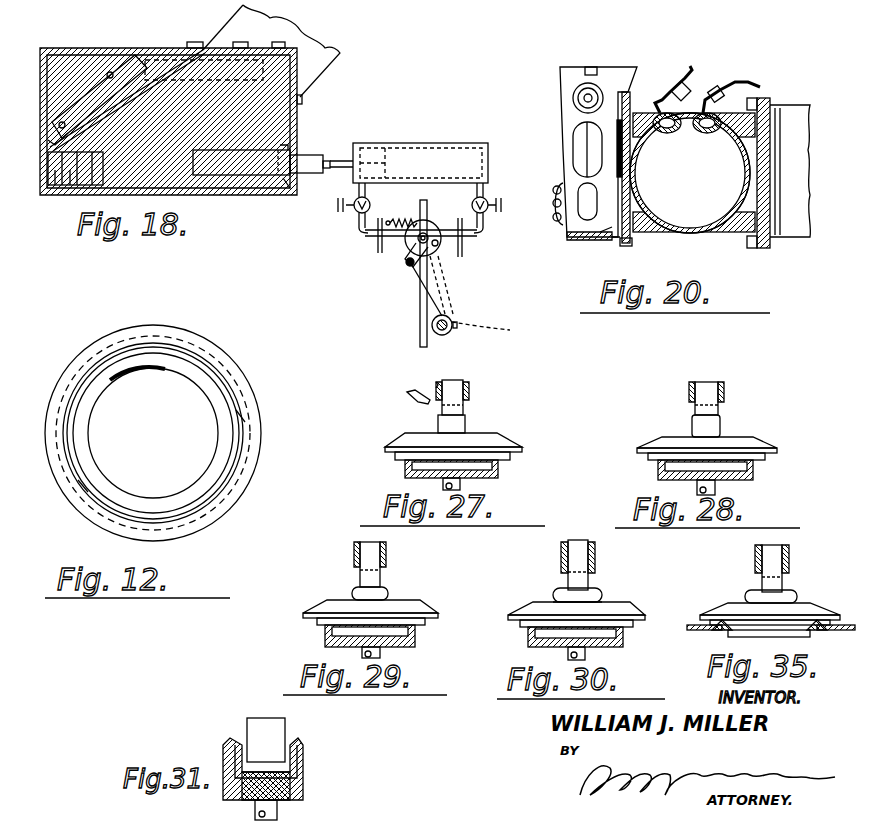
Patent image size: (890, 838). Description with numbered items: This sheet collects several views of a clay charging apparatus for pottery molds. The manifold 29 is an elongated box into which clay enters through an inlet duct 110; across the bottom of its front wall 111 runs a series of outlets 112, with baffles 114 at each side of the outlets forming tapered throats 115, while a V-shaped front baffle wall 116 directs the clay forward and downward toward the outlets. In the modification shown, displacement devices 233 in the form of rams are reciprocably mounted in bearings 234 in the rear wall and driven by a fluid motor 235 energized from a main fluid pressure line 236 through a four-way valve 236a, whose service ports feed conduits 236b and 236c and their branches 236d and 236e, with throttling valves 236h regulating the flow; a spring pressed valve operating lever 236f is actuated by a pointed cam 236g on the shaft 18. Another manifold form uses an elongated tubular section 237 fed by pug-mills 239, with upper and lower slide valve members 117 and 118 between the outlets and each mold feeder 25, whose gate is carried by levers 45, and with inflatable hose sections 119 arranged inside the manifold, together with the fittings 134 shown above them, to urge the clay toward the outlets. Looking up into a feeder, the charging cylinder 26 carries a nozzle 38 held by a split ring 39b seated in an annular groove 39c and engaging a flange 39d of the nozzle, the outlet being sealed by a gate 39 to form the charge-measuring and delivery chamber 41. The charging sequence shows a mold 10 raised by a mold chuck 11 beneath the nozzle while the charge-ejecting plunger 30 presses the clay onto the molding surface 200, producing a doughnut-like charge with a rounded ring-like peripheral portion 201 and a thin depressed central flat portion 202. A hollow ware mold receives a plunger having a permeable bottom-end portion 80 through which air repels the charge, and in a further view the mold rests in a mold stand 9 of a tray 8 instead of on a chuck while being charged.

In FIG. 35, the tray 8 is at (690, 627).
In FIG. 35, the mold stand 9 is at (712, 633).
In FIG. 27, the mold 10 is at (384, 458).
In FIG. 28, the mold 10 is at (636, 459).
In FIG. 29, the mold 10 is at (302, 621).
In FIG. 30, the mold 10 is at (507, 625).
In FIG. 35, the mold 10 is at (840, 617).
In FIG. 31, the mold 10 is at (311, 762).
In FIG. 27, the mold chuck 11 is at (498, 470).
In FIG. 28, the mold chuck 11 is at (753, 476).
In FIG. 29, the mold chuck 11 is at (415, 637).
In FIG. 30, the mold chuck 11 is at (623, 637).
In FIG. 31, the mold chuck 11 is at (303, 782).
In FIG. 18, the shaft 18 is at (453, 330).
In FIG. 20, the mold feeder 25 is at (551, 90).
In FIG. 12, the charging cylinder 26 is at (108, 340).
In FIG. 27, the charging cylinder 26 is at (437, 385).
In FIG. 28, the charging cylinder 26 is at (689, 390).
In FIG. 29, the charging cylinder 26 is at (354, 557).
In FIG. 30, the charging cylinder 26 is at (565, 557).
In FIG. 35, the charging cylinder 26 is at (755, 553).
In FIG. 18, the manifold 29 is at (134, 41).
In FIG. 27, the charge-ejecting plunger 30 is at (455, 385).
In FIG. 28, the charge-ejecting plunger 30 is at (706, 383).
In FIG. 29, the charge-ejecting plunger 30 is at (360, 550).
In FIG. 30, the charge-ejecting plunger 30 is at (578, 545).
In FIG. 31, the charge-ejecting plunger 30 is at (285, 725).
In FIG. 12, the nozzle 38 is at (215, 393).
In FIG. 27, the nozzle 38 is at (440, 410).
In FIG. 28, the nozzle 38 is at (693, 410).
In FIG. 29, the nozzle 38 is at (356, 568).
In FIG. 30, the nozzle 38 is at (562, 574).
In FIG. 35, the nozzle 38 is at (789, 572).
In FIG. 20, the gate 39 is at (577, 242).
In FIG. 27, the gate 39 is at (405, 397).
In FIG. 12, the split ring 39b is at (245, 420).
In FIG. 12, the annular groove 39c is at (72, 376).
In FIG. 12, the flange 39d is at (84, 488).
In FIG. 12, the charge-measuring and delivery chamber 41 is at (200, 362).
In FIG. 27, the charge-measuring and delivery chamber 41 is at (468, 390).
In FIG. 28, the charge-measuring and delivery chamber 41 is at (724, 388).
In FIG. 29, the charge-measuring and delivery chamber 41 is at (386, 556).
In FIG. 30, the charge-measuring and delivery chamber 41 is at (595, 552).
In FIG. 35, the charge-measuring and delivery chamber 41 is at (789, 553).
In FIG. 20, the lever 45 is at (566, 124).
In FIG. 31, the permeable bottom-end portion 80 is at (290, 742).
In FIG. 18, the inlet duct 110 is at (320, 53).
In FIG. 18, the front wall 111 is at (52, 96).
In FIG. 20, the outlet 112 is at (626, 203).
In FIG. 18, the baffle 114 is at (95, 172).
In FIG. 18, the throat 115 is at (77, 182).
In FIG. 18, the front baffle wall 116 is at (140, 77).
In FIG. 20, the upper slide valve member 117 is at (616, 144).
In FIG. 20, the lower slide valve member 118 is at (615, 242).
In FIG. 20, the hose section 119 is at (706, 136).
In FIG. 20, the nozzle fitting 134 is at (655, 96).
In FIG. 27, the molding surface 200 is at (500, 440).
In FIG. 28, the molding surface 200 is at (745, 440).
In FIG. 29, the molding surface 200 is at (412, 603).
In FIG. 30, the molding surface 200 is at (630, 606).
In FIG. 35, the molding surface 200 is at (810, 605).
In FIG. 30, the ring-like peripheral portion 201 is at (602, 592).
In FIG. 35, the ring-like peripheral portion 201 is at (745, 594).
In FIG. 30, the central flat portion 202 is at (553, 596).
In FIG. 18, the displacement device 233 is at (243, 157).
In FIG. 18, the bearing 234 is at (276, 180).
In FIG. 18, the fluid motor 235 is at (435, 136).
In FIG. 18, the main fluid pressure line 236 is at (420, 340).
In FIG. 18, the four-way valve 236a is at (420, 211).
In FIG. 18, the conduit 236b is at (402, 250).
In FIG. 18, the conduit 236c is at (450, 250).
In FIG. 18, the branch 236d is at (378, 243).
In FIG. 18, the branch 236e is at (464, 242).
In FIG. 18, the valve operating lever 236f is at (412, 292).
In FIG. 18, the pointed cam 236g is at (447, 270).
In FIG. 18, the throttling valve 236h is at (362, 224).
In FIG. 20, the tubular section 237 is at (702, 233).
In FIG. 20, the pug-mill 239 is at (808, 130).